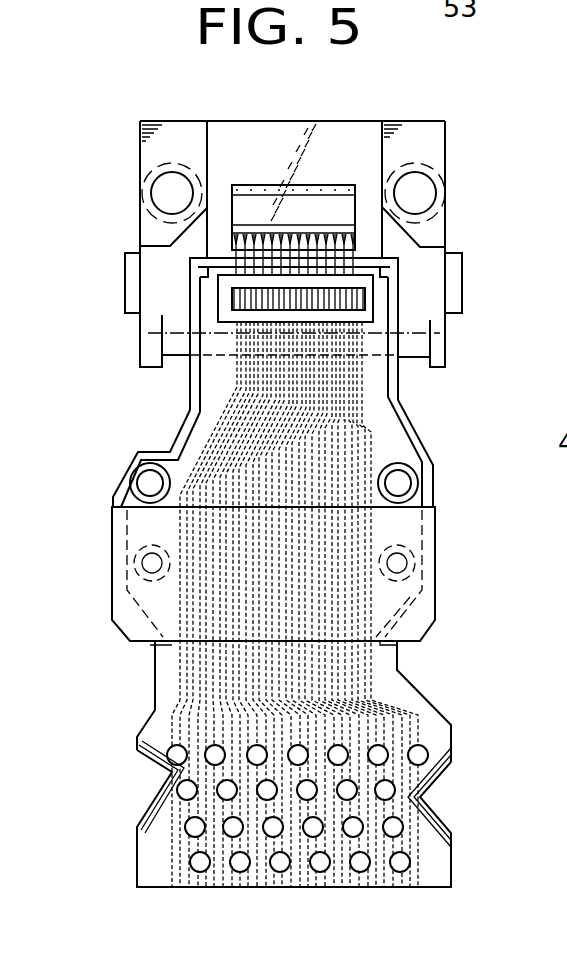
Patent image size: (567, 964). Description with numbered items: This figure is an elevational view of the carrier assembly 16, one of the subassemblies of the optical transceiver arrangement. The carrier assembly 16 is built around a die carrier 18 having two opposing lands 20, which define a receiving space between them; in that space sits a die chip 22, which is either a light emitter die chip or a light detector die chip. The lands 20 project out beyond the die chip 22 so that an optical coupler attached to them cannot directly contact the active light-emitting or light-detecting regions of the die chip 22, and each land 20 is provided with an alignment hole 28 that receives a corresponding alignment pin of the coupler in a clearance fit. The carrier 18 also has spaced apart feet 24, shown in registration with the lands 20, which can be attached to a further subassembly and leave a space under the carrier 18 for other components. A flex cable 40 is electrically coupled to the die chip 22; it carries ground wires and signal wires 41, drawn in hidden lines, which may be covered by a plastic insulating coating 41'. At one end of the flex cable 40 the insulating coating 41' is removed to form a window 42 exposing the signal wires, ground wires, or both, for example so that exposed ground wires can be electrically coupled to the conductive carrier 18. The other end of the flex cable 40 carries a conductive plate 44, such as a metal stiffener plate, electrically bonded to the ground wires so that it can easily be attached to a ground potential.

The carrier assembly 16 is at (125, 196).
The die carrier 18 is at (257, 137).
The opposing lands 20 is at (435, 137).
The die chip 22 is at (329, 210).
The feet 24 is at (450, 358).
The alignment hole 28 is at (425, 193).
The flex cable 40 is at (447, 531).
The signal wires 41 is at (321, 604).
The insulating coating 41' is at (340, 804).
The window 42 is at (363, 302).
The conductive plate 44 is at (423, 620).